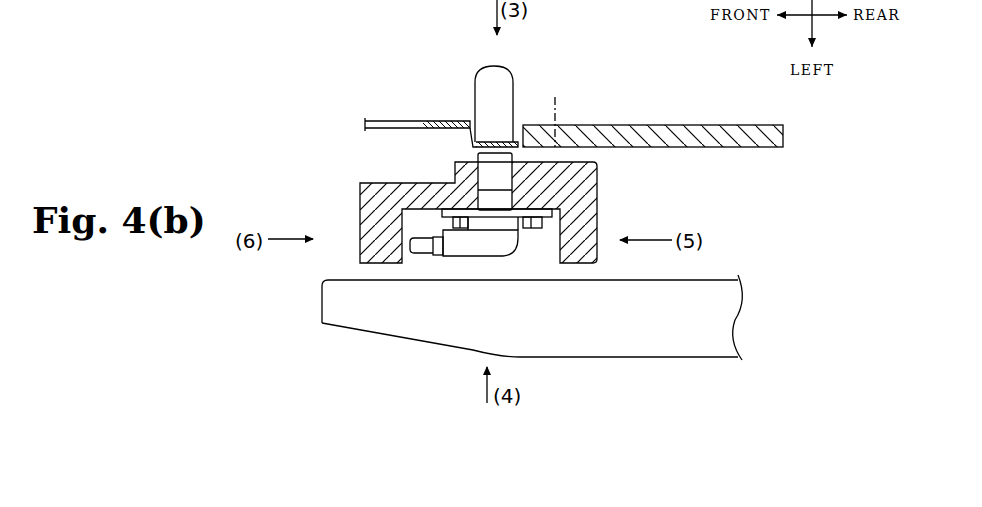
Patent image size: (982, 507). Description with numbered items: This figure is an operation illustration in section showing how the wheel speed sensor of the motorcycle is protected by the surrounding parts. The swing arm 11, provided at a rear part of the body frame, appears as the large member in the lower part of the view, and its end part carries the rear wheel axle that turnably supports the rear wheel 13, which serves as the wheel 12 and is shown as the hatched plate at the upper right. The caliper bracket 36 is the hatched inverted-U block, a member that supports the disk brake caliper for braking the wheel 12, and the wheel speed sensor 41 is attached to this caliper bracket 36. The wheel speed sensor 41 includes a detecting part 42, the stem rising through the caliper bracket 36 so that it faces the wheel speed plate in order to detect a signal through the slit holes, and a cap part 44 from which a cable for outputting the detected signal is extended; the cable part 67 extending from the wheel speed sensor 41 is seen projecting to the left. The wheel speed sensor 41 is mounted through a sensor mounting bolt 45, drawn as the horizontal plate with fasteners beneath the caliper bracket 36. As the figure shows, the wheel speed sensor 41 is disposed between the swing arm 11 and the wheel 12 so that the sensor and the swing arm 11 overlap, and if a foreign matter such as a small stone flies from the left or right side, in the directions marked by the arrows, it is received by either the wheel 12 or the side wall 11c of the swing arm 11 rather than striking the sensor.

The swing arm 11 is at (352, 302).
The side wall of the swing arm 11c is at (473, 352).
The wheel 12 is at (653, 77).
The rear wheel 13 is at (594, 48).
The caliper bracket 36 is at (352, 264).
The wheel speed sensor 41 is at (496, 257).
The detecting part 42 is at (490, 172).
The cap part 44 is at (490, 237).
The sensor mounting bolt 45 is at (455, 221).
The cable part 67 is at (423, 250).